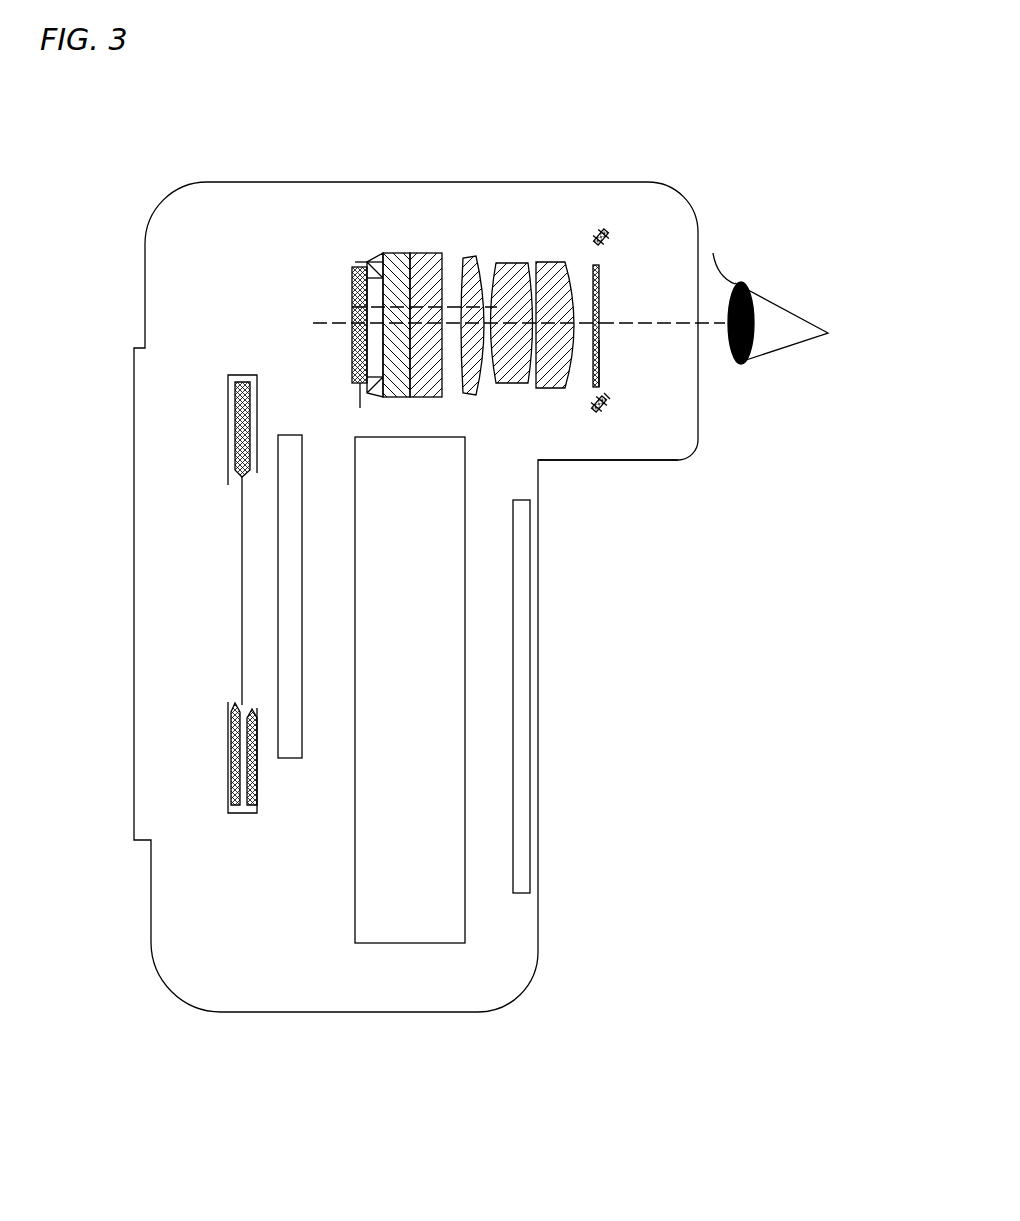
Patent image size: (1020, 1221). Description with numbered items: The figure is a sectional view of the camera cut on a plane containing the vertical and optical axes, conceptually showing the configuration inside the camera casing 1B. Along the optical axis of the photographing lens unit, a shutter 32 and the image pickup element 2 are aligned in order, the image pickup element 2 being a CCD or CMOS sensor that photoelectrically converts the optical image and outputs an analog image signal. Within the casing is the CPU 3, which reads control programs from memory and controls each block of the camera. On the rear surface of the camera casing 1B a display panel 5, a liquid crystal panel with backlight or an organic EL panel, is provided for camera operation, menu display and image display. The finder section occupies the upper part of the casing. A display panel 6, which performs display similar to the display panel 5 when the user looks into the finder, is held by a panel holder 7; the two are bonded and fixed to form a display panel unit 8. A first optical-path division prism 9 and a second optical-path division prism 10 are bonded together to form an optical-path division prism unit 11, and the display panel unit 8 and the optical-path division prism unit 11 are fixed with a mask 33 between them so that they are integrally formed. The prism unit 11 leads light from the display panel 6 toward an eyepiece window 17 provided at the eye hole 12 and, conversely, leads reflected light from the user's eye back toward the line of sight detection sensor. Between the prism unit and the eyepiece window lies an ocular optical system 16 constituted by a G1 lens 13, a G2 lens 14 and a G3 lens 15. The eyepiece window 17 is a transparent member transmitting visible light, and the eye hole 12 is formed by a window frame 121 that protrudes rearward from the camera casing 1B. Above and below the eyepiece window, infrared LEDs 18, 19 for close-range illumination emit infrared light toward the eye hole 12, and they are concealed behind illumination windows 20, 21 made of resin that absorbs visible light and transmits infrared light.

The camera casing 1B is at (147, 228).
The image pickup element 2 is at (291, 750).
The CPU 3 is at (415, 920).
The display panel 5 is at (525, 812).
The display panel 6 is at (350, 307).
The panel holder 7 is at (370, 262).
The display panel unit 8 is at (296, 235).
The first optical-path division prism 9 is at (398, 256).
The second optical-path division prism 10 is at (424, 256).
The optical-path division prism unit 11 is at (442, 218).
The eye hole 12 is at (667, 353).
The G1 lens 13 is at (474, 260).
The G2 lens 14 is at (510, 263).
The G3 lens 15 is at (554, 262).
The ocular optical system 16 is at (564, 217).
The eyepiece window 17 is at (600, 352).
The infrared LED 18 is at (592, 402).
The infrared LED 19 is at (603, 228).
The illumination window 20 is at (606, 395).
The illumination window 21 is at (605, 245).
The shutter 32 is at (242, 798).
The mask 33 is at (380, 262).
The window frame 121 is at (647, 460).